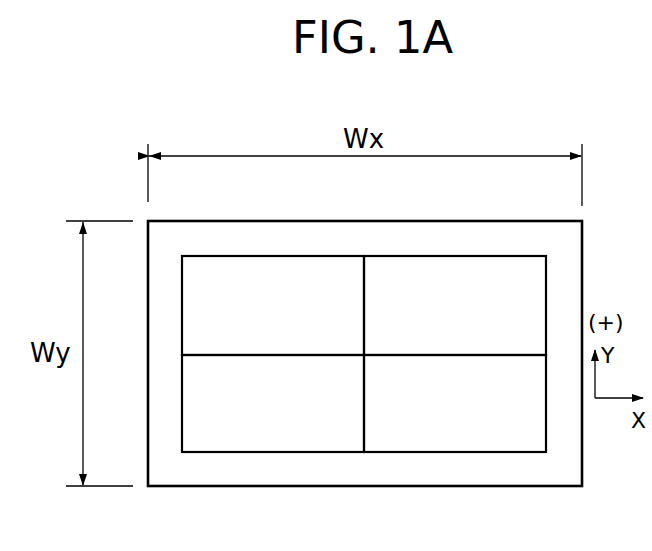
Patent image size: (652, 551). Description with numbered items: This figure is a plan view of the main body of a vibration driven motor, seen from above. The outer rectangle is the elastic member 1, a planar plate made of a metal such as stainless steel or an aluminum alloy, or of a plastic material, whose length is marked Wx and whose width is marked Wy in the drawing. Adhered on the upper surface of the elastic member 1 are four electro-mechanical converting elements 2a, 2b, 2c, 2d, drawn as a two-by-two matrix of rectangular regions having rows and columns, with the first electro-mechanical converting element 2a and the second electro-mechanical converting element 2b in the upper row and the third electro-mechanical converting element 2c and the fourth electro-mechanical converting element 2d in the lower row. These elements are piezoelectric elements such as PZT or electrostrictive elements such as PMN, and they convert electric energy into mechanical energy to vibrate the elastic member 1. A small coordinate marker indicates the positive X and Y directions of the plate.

The elastic member 1 is at (570, 247).
The electro-mechanical converting element 2a is at (270, 290).
The electro-mechanical converting element 2b is at (447, 290).
The electro-mechanical converting element 2c is at (272, 420).
The electro-mechanical converting element 2d is at (448, 420).